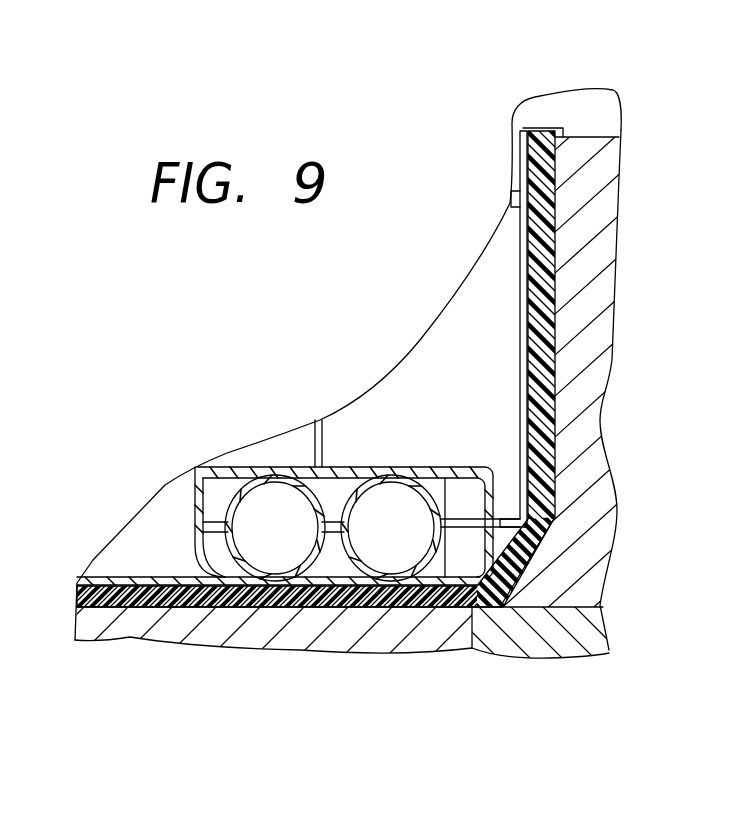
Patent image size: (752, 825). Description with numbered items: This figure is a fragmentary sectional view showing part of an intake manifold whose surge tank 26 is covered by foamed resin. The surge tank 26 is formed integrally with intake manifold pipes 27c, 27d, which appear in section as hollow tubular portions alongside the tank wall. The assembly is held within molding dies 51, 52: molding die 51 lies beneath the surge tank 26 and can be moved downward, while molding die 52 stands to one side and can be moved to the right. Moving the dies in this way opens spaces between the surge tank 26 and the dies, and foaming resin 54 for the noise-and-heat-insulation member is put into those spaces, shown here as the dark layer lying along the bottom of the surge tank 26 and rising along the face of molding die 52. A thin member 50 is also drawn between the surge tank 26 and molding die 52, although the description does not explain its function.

The surge tank 26 is at (155, 537).
The intake manifold pipe 27c is at (268, 503).
The intake manifold pipe 27d is at (392, 502).
The bracket 50 is at (527, 248).
The molding die 51 is at (90, 622).
The molding die 52 is at (597, 220).
The foaming resin 54 is at (543, 140).